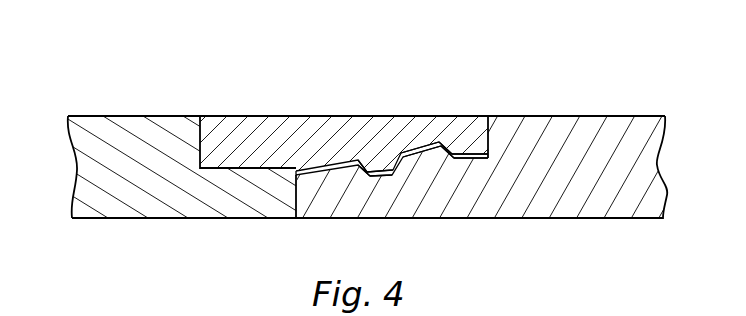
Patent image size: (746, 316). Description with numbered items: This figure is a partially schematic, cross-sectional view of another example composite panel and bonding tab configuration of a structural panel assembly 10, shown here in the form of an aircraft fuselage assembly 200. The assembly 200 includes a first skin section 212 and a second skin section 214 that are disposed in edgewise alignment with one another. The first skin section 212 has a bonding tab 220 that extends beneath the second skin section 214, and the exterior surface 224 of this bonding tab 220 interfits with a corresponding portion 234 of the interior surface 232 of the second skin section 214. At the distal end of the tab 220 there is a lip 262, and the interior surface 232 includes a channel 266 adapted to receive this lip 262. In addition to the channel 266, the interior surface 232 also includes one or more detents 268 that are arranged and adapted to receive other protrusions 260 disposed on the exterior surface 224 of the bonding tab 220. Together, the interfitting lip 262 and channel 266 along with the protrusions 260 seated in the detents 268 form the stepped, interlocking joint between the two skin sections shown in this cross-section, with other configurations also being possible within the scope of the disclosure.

The structural panel assembly 10 is at (80, 30).
The aircraft fuselage assembly 200 is at (116, 74).
The first skin section 212 is at (153, 114).
The second skin section 214 is at (609, 114).
The bonding tab 220 is at (330, 116).
The exterior surface 224 is at (333, 168).
The interior surface 232 is at (570, 116).
The corresponding portion 234 is at (443, 137).
The protrusions 260 is at (392, 175).
The lip 262 is at (442, 148).
The channel 266 is at (478, 157).
The detents 268 is at (366, 175).